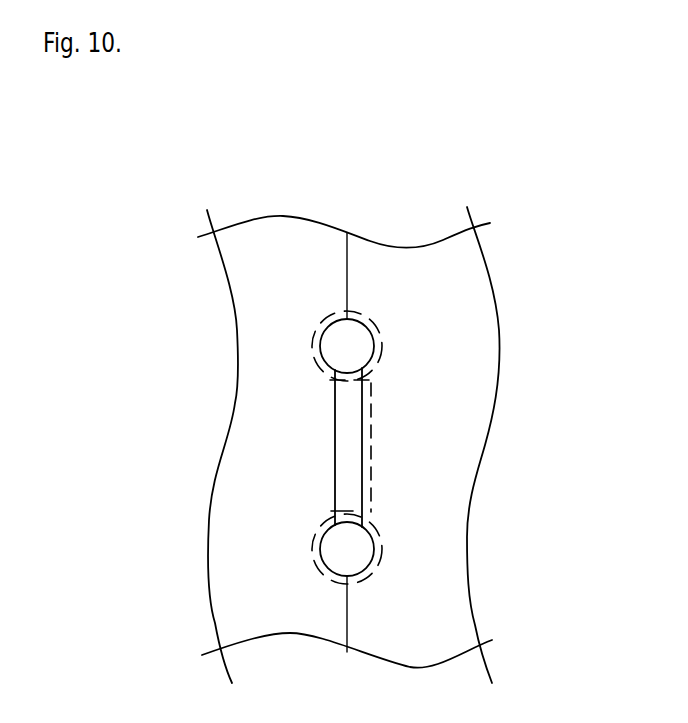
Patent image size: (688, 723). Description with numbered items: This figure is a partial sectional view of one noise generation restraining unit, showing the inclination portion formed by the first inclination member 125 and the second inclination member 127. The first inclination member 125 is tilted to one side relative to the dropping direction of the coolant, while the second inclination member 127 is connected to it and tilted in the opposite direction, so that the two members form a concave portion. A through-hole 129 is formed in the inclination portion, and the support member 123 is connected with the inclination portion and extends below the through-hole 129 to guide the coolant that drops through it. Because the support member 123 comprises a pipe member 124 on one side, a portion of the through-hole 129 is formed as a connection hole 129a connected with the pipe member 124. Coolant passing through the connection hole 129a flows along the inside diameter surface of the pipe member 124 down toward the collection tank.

The support member 123 is at (371, 458).
The pipe member 124 is at (380, 552).
The first inclination member 125 is at (253, 332).
The second inclination member 127 is at (460, 332).
The through-hole 129 is at (352, 437).
The connection hole 129a is at (347, 346).